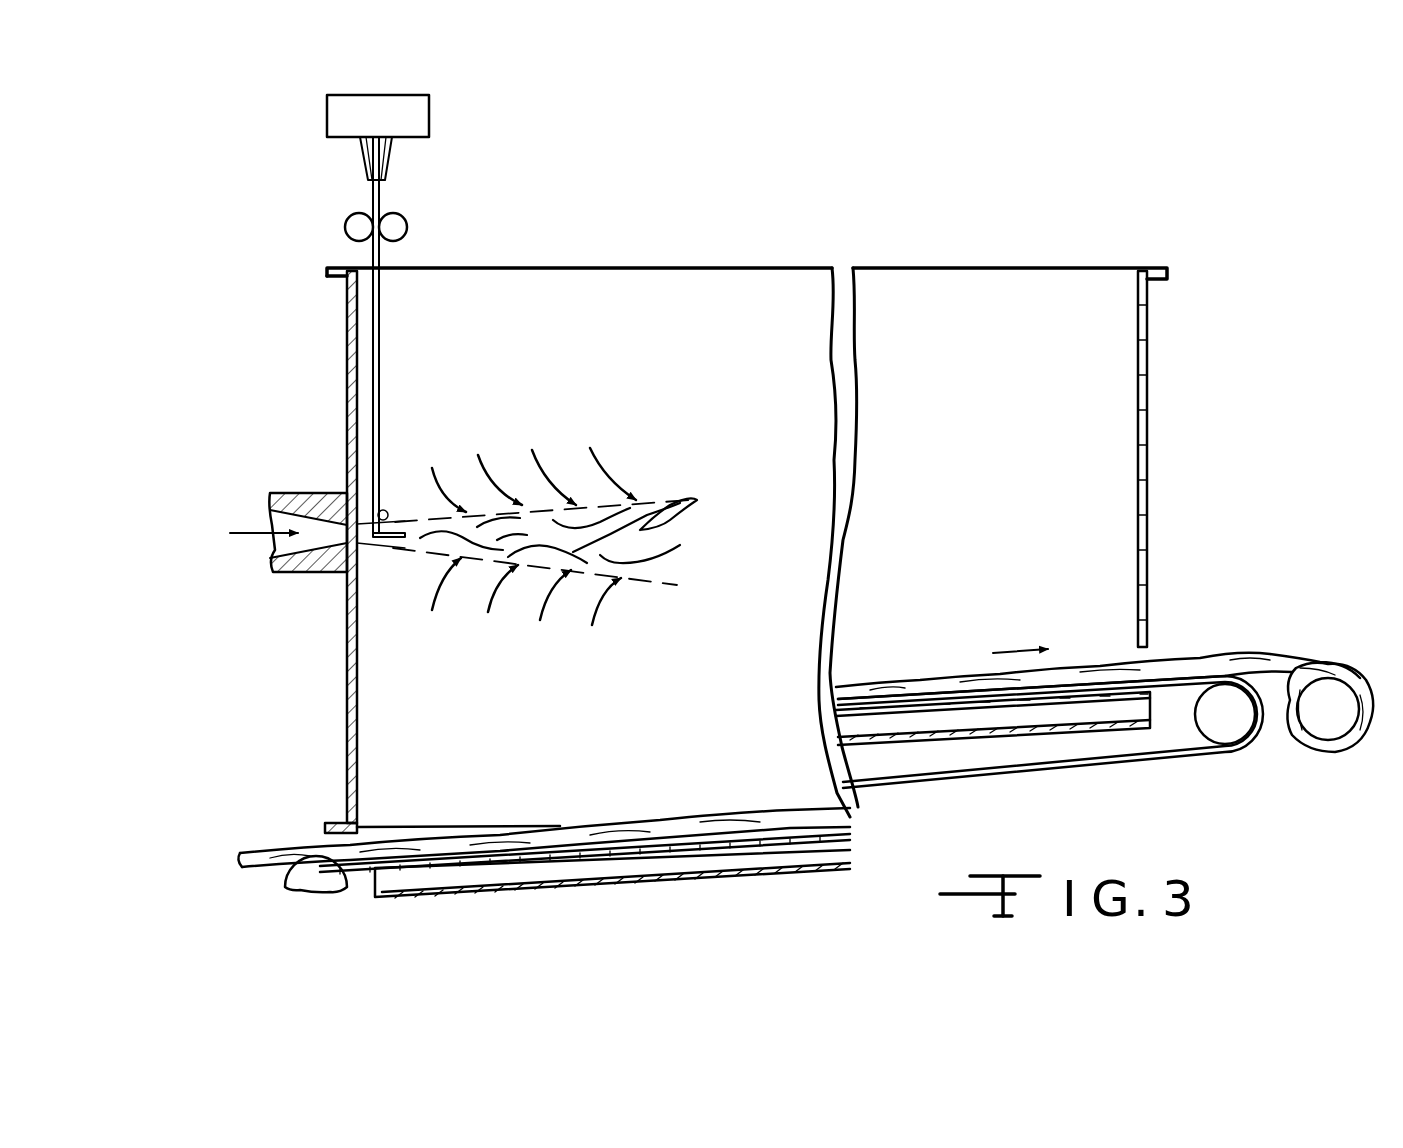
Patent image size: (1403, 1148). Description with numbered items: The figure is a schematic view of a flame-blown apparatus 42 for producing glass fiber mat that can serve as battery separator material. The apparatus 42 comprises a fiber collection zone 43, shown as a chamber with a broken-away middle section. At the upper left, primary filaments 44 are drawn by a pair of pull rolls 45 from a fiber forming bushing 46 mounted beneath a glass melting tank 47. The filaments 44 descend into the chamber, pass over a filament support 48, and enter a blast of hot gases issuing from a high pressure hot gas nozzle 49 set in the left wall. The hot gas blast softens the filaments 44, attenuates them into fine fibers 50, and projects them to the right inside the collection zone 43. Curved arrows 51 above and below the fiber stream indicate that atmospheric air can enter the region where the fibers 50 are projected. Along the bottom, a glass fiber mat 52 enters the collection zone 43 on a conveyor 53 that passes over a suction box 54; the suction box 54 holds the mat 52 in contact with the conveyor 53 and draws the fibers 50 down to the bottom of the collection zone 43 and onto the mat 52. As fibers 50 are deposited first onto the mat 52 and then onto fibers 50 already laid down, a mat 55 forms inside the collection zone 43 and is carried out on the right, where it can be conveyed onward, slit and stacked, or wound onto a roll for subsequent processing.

The apparatus 42 is at (1164, 436).
The fiber collection zone 43 is at (1148, 520).
The primary filaments 44 is at (381, 195).
The pull rolls 45 is at (343, 230).
The fiber forming bushing 46 is at (392, 158).
The glass melting tank 47 is at (432, 115).
The filament support 48 is at (388, 510).
The high pressure hot gas nozzle 49 is at (280, 548).
The fine fibers 50 is at (684, 506).
The arrows 51 is at (523, 541).
The glass fiber mat 52 is at (287, 852).
The conveyor 53 is at (500, 862).
The suction box 54 is at (630, 877).
The mat 55 is at (1105, 655).